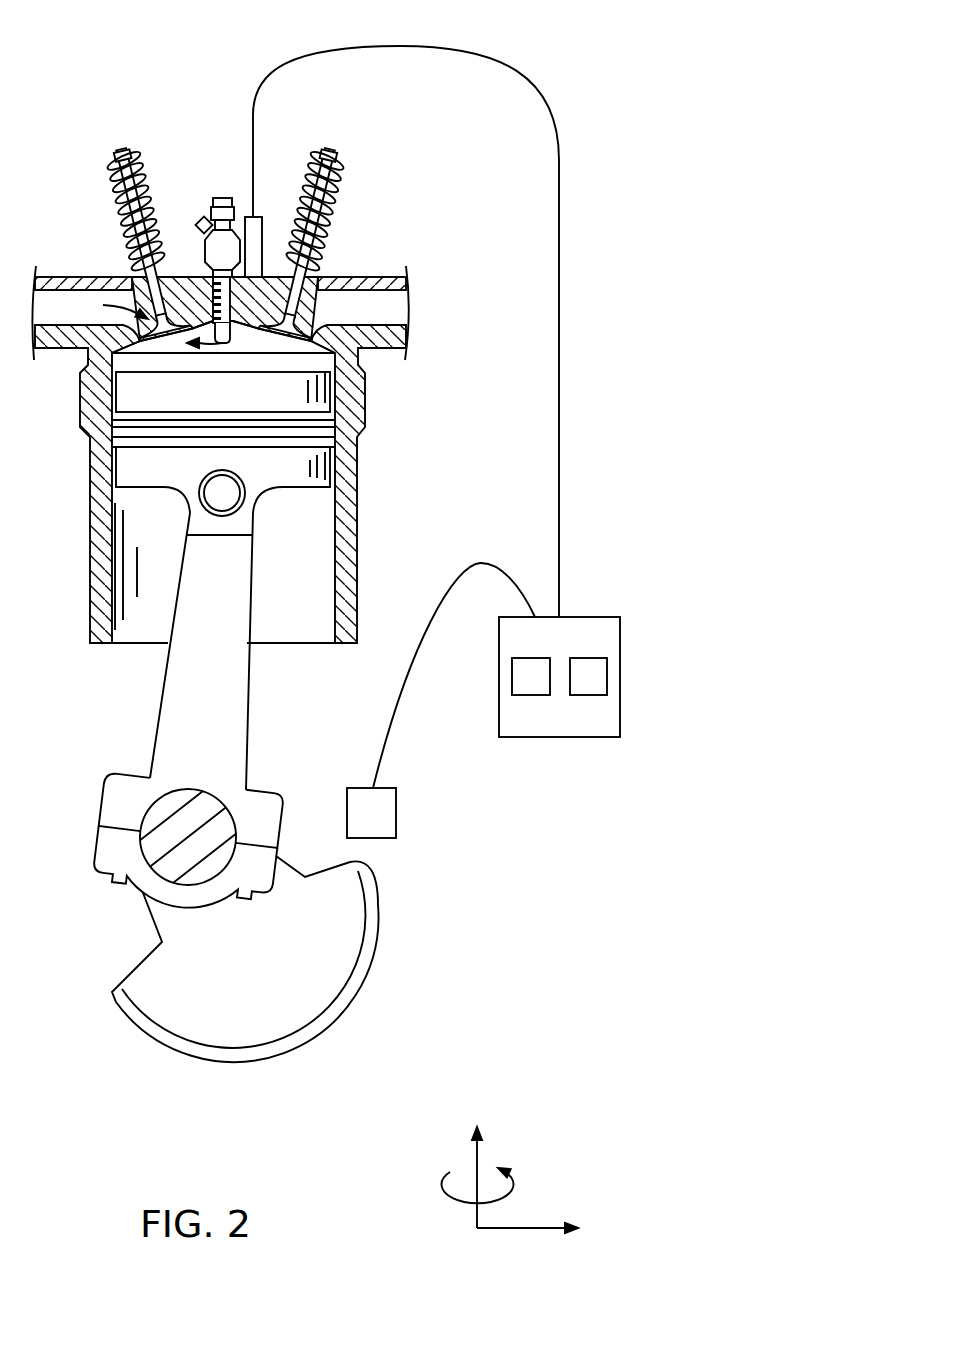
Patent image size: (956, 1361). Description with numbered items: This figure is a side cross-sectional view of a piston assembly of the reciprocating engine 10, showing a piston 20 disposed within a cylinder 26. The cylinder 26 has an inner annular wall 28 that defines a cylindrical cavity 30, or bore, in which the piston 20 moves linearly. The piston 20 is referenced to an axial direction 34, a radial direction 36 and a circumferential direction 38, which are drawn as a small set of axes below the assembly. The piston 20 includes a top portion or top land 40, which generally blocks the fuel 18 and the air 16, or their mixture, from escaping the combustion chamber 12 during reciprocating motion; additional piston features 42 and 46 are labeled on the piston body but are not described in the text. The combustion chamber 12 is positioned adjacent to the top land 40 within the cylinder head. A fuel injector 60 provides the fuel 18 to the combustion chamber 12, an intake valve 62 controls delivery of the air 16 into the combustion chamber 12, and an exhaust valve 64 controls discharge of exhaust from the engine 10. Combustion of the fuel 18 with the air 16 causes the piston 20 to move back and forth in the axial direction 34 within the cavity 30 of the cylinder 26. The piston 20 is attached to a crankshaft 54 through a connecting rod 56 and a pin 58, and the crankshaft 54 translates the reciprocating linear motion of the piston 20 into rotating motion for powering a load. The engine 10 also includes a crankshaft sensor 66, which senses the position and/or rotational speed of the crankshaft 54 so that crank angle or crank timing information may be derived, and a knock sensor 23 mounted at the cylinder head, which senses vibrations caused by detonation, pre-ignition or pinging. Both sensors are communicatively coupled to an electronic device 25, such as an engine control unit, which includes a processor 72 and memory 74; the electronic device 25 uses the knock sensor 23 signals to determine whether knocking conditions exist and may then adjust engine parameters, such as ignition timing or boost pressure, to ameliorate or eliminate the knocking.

The engine 10 is at (449, 174).
The combustion chamber 12 is at (265, 340).
The oxidant 16 is at (125, 320).
The fuel 18 is at (222, 193).
The piston 20 is at (300, 483).
The knock sensor 23 is at (262, 232).
The electronic device 25 is at (592, 617).
The cylinder 26 is at (92, 527).
The inner annular wall 28 is at (115, 566).
The cylindrical cavity 30 is at (162, 634).
The axial direction 34 is at (477, 1160).
The radial direction 36 is at (520, 1230).
The circumferential direction 38 is at (512, 1195).
The top land 40 is at (282, 402).
The piston top land 42 is at (112, 400).
The piston rings 46 is at (335, 433).
The crankshaft 54 is at (156, 1002).
The connecting rod 56 is at (232, 752).
The pin 58 is at (229, 500).
The fuel injector 60 is at (228, 210).
The intake valve 62 is at (121, 152).
The exhaust valve 64 is at (332, 155).
The crankshaft sensor 66 is at (398, 814).
The processor 72 is at (532, 695).
The memory 74 is at (591, 695).